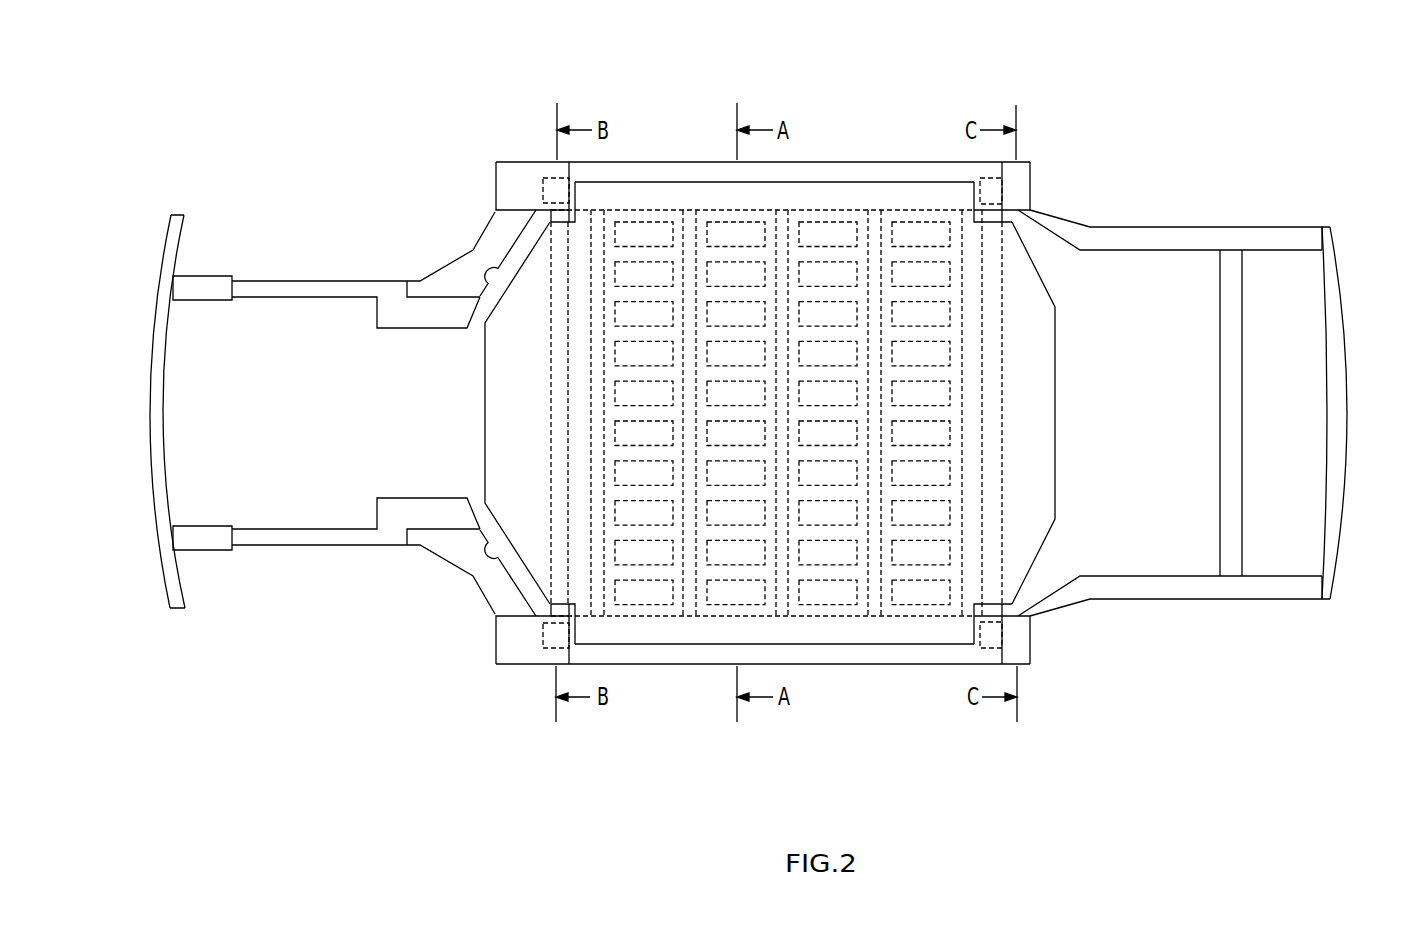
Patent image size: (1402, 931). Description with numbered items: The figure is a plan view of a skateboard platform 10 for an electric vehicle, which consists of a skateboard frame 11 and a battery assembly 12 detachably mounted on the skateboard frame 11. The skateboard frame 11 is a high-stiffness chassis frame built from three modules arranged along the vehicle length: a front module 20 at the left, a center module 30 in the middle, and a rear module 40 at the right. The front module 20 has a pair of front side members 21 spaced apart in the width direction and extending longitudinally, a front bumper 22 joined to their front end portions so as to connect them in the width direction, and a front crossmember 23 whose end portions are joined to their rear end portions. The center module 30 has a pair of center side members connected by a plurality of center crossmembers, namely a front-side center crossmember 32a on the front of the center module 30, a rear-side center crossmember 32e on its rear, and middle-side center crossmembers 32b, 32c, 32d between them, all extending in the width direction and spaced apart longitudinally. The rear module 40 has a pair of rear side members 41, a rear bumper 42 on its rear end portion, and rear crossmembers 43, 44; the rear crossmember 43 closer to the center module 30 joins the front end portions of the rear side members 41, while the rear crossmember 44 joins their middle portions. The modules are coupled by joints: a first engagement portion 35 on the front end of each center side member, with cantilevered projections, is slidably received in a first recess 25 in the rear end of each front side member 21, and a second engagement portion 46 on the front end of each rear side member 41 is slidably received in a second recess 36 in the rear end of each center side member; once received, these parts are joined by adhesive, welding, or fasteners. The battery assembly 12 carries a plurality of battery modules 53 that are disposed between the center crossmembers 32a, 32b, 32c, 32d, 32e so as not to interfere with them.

The skateboard platform 10 is at (343, 116).
The skateboard frame 11 is at (617, 93).
The battery assembly 12 is at (1057, 358).
The front module 20 is at (325, 256).
The front side member 21 is at (348, 287).
The front bumper 22 is at (155, 412).
The front crossmember 23 is at (548, 392).
The first recess 25 is at (538, 190).
The center module 30 is at (857, 162).
The front-side center crossmember 32a is at (600, 262).
The middle-side center crossmember 32b is at (692, 262).
The middle-side center crossmember 32c is at (783, 262).
The middle-side center crossmember 32d is at (876, 262).
The rear-side center crossmember 32e is at (967, 255).
The first engagement portion 35 is at (552, 178).
The second recess 36 is at (980, 190).
The rear module 40 is at (1230, 191).
The rear side member 41 is at (1260, 235).
The rear bumper 42 is at (1333, 285).
The rear crossmember 43 is at (1002, 463).
The rear crossmember 44 is at (1233, 438).
The second engagement portion 46 is at (990, 180).
The battery module 53 is at (613, 250).